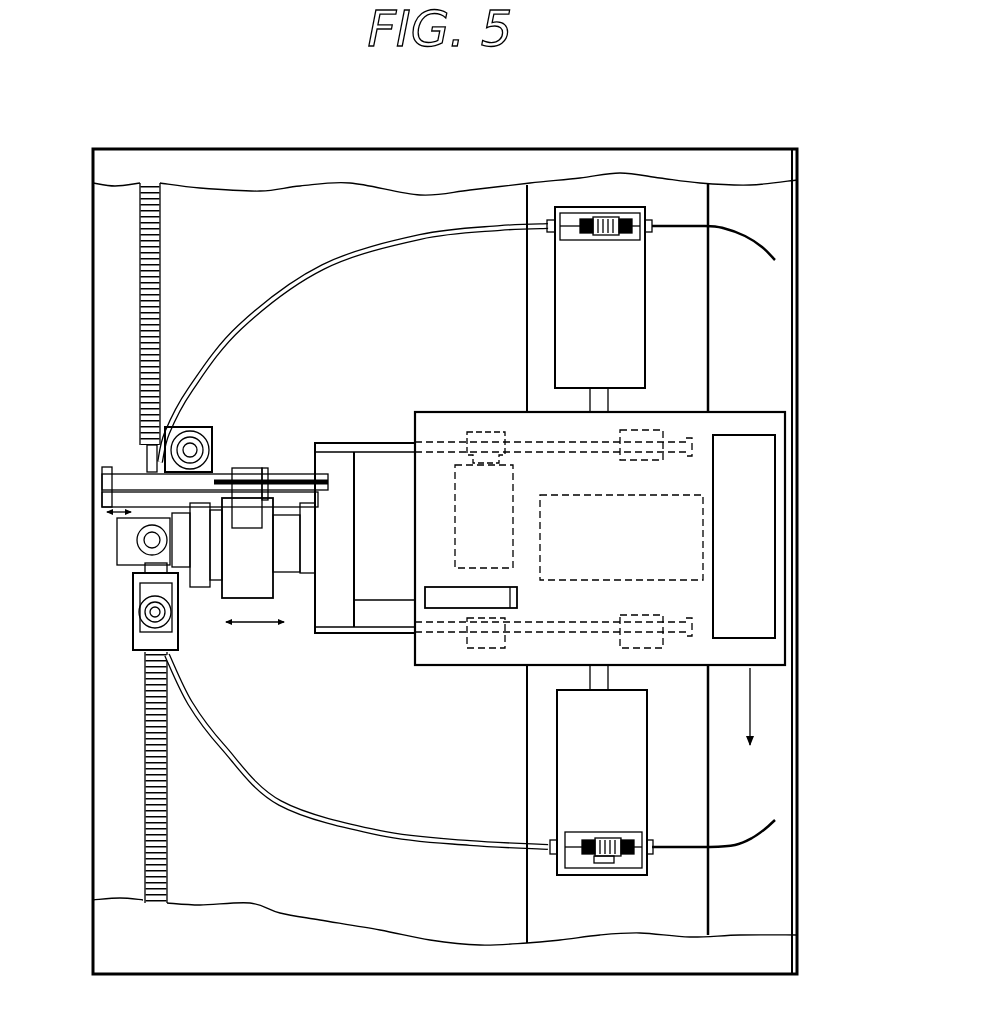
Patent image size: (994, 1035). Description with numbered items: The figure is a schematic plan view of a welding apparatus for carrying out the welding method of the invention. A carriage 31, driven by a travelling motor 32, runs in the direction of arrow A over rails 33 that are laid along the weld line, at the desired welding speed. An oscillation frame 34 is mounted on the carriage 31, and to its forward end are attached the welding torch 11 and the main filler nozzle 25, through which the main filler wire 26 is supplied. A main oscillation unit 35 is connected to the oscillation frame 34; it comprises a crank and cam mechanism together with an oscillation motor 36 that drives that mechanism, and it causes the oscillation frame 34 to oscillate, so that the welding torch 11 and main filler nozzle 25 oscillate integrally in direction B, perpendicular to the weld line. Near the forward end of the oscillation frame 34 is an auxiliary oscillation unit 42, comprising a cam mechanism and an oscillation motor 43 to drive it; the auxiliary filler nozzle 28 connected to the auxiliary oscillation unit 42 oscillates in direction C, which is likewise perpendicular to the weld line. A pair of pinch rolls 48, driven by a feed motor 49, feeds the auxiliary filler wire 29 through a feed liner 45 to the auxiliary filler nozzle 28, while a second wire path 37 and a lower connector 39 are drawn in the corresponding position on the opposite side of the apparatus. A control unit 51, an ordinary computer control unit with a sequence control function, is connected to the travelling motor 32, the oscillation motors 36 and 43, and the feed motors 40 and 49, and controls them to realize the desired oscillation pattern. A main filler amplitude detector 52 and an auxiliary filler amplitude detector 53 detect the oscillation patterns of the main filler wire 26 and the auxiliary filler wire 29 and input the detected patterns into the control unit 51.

The welding torch 11 is at (122, 548).
The main filler nozzle 25 is at (178, 565).
The main filler wire 26 is at (739, 845).
The auxiliary filler nozzle 28 is at (152, 500).
The auxiliary filler wire 29 is at (731, 234).
The carriage 31 is at (773, 407).
The travelling motor 32 is at (585, 500).
The rails 33 is at (535, 797).
The oscillation frame 34 is at (381, 634).
The main oscillation unit 35 is at (484, 434).
The oscillation motor 36 is at (462, 508).
The lower cable 37 is at (358, 828).
The lower connector unit 39 is at (603, 868).
The feed motor 40 is at (562, 758).
The auxiliary oscillation unit 42 is at (202, 427).
The oscillation motor 43 is at (262, 548).
The feed liner 45 is at (335, 265).
The pinch rolls 48 is at (601, 237).
The feed motor 49 is at (571, 301).
The control unit 51 is at (731, 545).
The main filler amplitude detector 52 is at (441, 608).
The auxiliary filler amplitude detector 53 is at (245, 508).
The direction of travel A is at (752, 698).
The main oscillation direction B is at (255, 623).
The auxiliary oscillation direction C is at (117, 523).